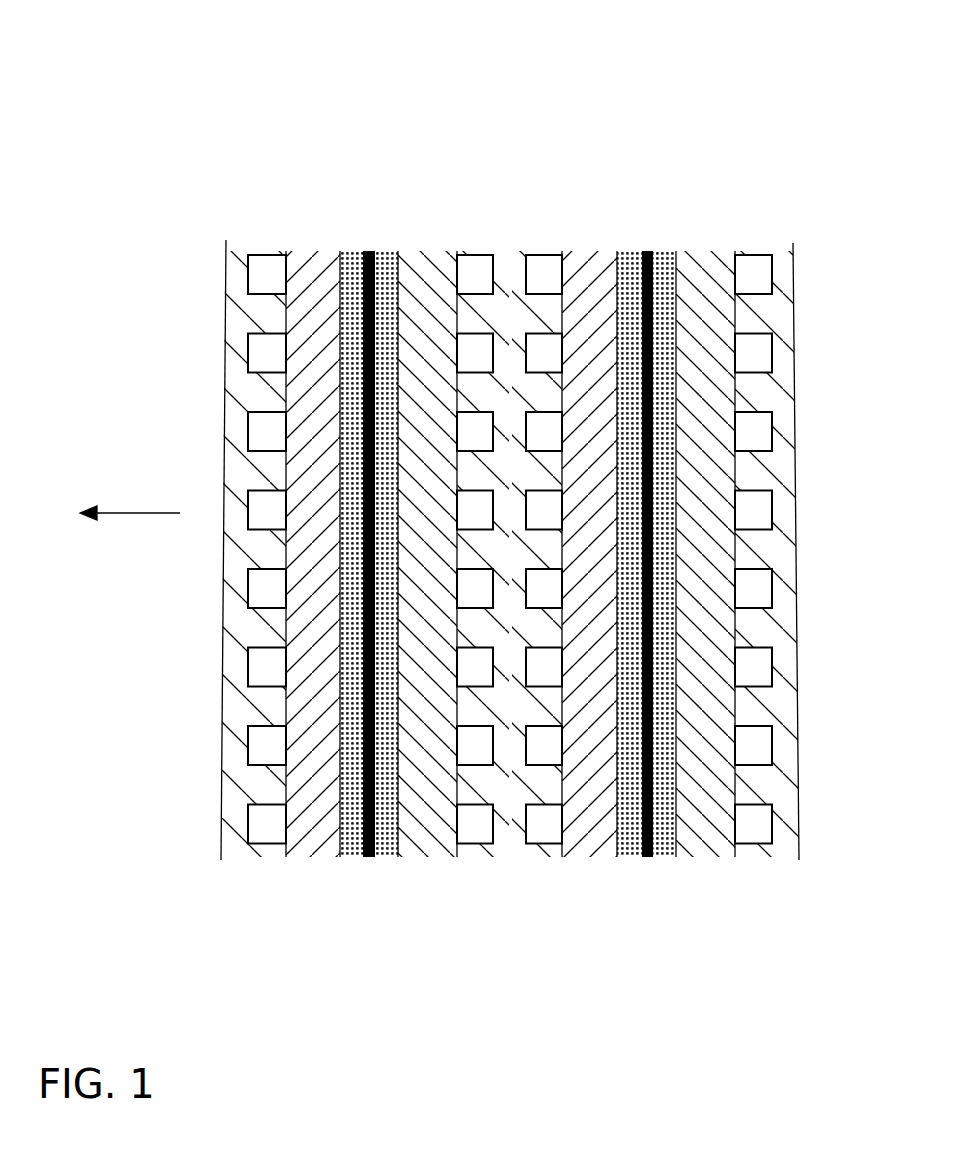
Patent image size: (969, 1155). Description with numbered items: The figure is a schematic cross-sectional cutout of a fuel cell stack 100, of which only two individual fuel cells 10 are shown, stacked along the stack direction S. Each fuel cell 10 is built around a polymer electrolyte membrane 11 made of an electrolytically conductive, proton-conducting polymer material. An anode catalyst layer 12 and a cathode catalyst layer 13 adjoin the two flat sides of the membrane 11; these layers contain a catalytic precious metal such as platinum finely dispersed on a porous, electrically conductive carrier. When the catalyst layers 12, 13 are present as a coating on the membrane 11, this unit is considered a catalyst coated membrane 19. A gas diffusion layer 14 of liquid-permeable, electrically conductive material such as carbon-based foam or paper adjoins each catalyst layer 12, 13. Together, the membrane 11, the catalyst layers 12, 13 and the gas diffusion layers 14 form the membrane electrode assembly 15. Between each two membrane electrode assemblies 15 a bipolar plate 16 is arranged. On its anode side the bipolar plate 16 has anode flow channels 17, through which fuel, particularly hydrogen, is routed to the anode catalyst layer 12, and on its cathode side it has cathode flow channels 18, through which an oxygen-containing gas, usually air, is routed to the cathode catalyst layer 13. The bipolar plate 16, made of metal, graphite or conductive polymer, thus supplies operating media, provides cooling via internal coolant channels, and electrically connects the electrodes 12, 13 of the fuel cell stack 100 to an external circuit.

The fuel cell stack 100 is at (205, 120).
The fuel cell 10 is at (797, 177).
The membrane electrode assembly 15 is at (285, 243).
The polymer electrolyte membrane 11 is at (370, 852).
The anode catalyst layer 12 is at (353, 838).
The cathode catalyst layer 13 is at (386, 838).
The gas diffusion layer 14 is at (315, 835).
The bipolar plate 16 is at (229, 823).
The anode flow channels 17 is at (263, 750).
The cathode flow channels 18 is at (760, 747).
The catalyst coated membrane 19 is at (313, 948).
The stack direction S is at (130, 499).